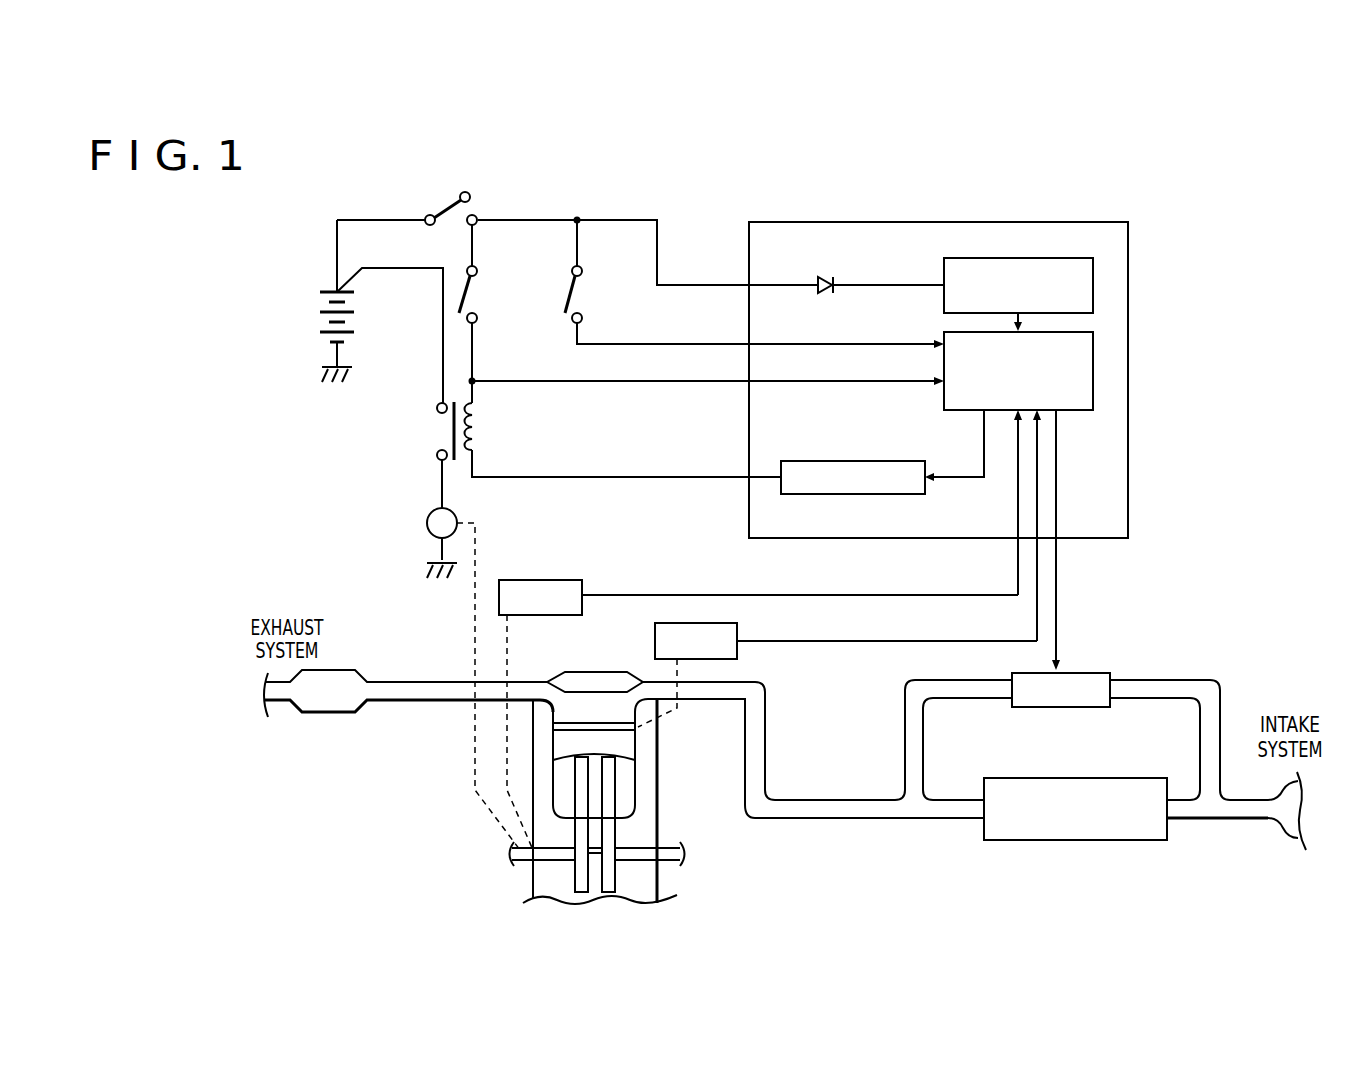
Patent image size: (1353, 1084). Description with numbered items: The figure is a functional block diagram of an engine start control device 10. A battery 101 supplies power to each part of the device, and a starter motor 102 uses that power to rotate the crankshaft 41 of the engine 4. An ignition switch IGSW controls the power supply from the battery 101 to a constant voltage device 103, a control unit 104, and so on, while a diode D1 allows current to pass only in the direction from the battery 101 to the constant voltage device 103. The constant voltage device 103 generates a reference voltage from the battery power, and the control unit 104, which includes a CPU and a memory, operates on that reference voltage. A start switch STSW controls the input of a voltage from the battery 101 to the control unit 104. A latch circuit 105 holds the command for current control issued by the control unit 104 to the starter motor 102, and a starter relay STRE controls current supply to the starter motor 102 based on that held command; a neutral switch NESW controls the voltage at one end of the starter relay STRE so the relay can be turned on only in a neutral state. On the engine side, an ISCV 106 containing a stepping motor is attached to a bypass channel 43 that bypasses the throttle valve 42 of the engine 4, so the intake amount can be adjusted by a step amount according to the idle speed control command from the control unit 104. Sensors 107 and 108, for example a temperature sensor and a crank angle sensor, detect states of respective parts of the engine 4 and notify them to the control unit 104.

The engine start control device 10 is at (945, 208).
The battery 101 is at (320, 300).
The starter motor 102 is at (427, 523).
The constant voltage device 103 is at (944, 275).
The control unit 104 is at (1083, 412).
The latch circuit 105 is at (820, 461).
The ISCV (control valve) 106 is at (1072, 673).
The sensor 107 is at (655, 650).
The sensor 108 is at (515, 581).
The engine 4 is at (668, 915).
The crankshaft 41 is at (633, 857).
The throttle valve 42 is at (1050, 778).
The bypass channel (gas channel) 43 is at (905, 743).
The diode D1 is at (816, 280).
The ignition switch IGSW is at (460, 203).
The neutral switch NESW is at (474, 298).
The start switch STSW is at (580, 298).
The starter relay STRE is at (480, 430).